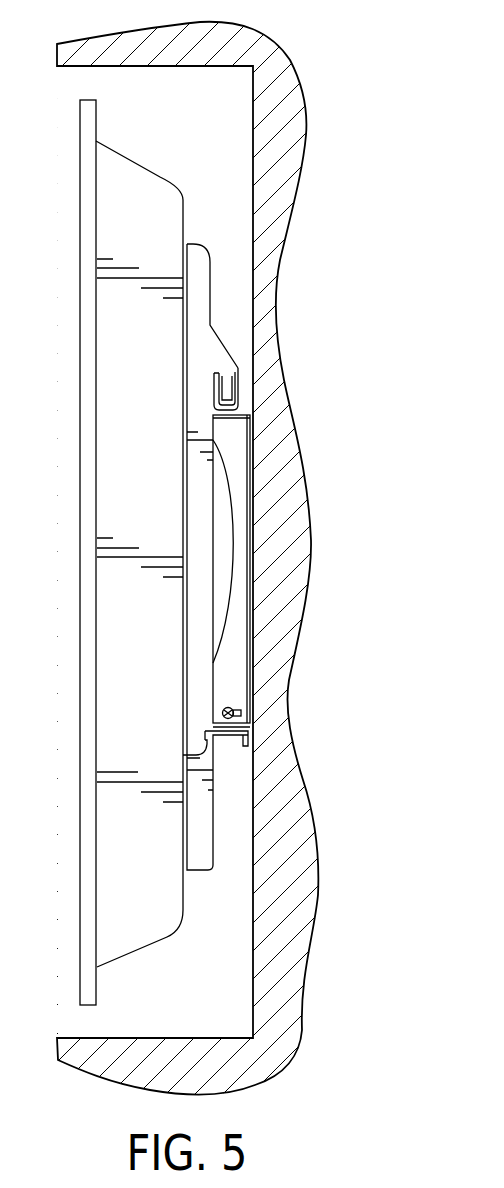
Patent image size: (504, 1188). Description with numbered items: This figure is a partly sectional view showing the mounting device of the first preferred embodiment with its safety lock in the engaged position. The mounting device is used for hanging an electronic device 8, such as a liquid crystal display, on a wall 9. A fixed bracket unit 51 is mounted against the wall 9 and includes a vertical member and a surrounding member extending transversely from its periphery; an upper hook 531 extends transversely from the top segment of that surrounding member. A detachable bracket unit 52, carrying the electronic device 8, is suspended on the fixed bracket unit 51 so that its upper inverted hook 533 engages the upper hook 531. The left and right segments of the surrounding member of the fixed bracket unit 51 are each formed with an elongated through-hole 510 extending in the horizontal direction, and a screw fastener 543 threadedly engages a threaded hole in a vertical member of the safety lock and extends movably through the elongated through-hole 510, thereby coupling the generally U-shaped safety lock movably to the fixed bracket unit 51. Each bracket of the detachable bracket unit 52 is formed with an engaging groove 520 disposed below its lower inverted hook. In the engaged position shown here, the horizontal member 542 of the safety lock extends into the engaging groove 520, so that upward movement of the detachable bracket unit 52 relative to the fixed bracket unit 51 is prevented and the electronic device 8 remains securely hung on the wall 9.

The electronic device 8 is at (137, 180).
The wall 9 is at (253, 122).
The detachable bracket unit 52 is at (198, 342).
The upper hook 531 is at (215, 399).
The upper inverted hook 533 is at (228, 394).
The fixed bracket unit 51 is at (248, 678).
The screw fastener 543 is at (222, 712).
The elongated through-hole 510 is at (234, 713).
The horizontal member 542 is at (245, 745).
The engaging groove 520 is at (185, 755).